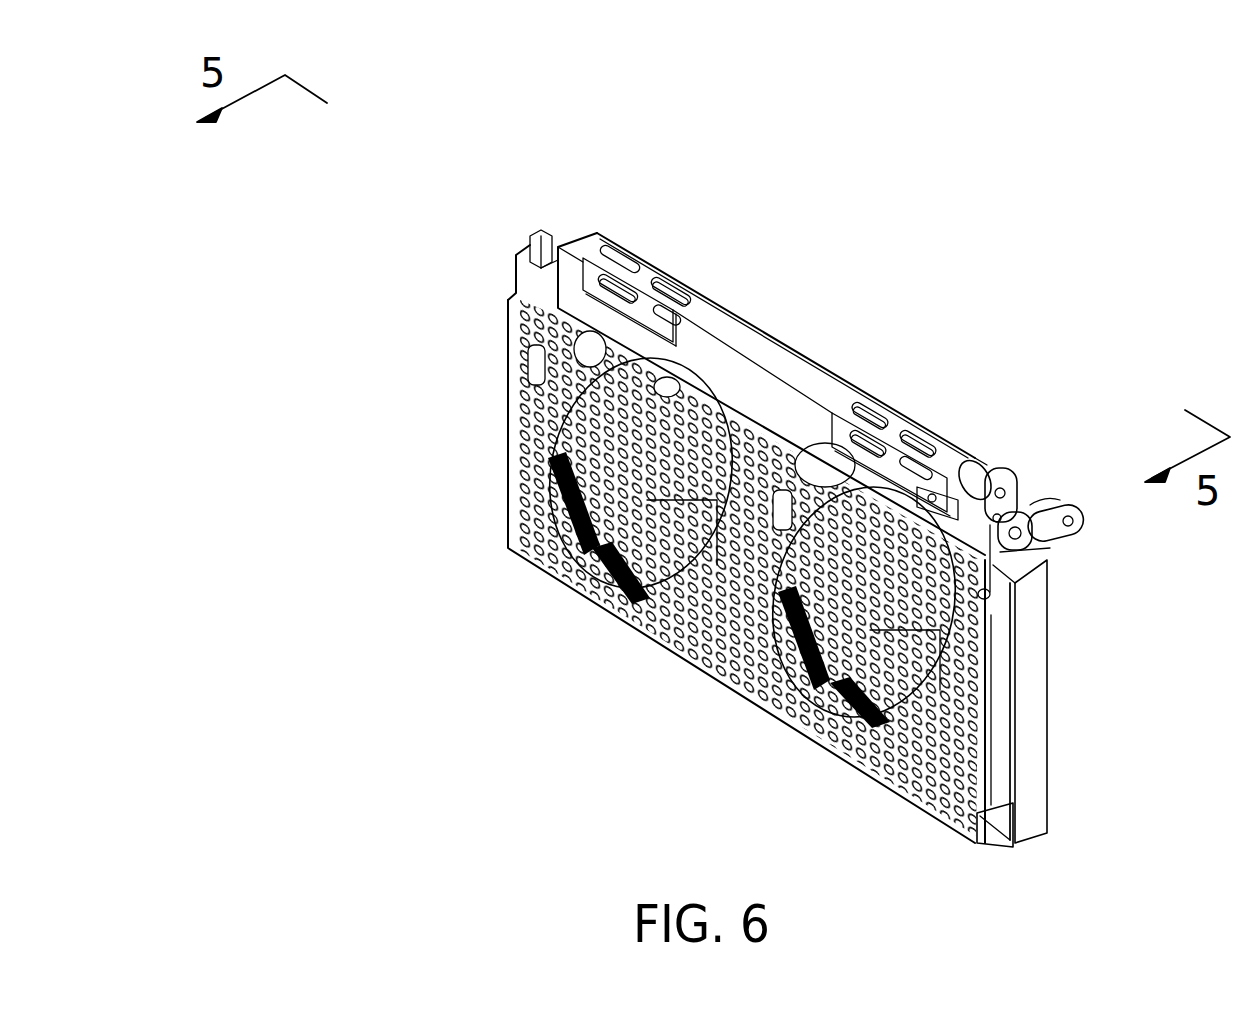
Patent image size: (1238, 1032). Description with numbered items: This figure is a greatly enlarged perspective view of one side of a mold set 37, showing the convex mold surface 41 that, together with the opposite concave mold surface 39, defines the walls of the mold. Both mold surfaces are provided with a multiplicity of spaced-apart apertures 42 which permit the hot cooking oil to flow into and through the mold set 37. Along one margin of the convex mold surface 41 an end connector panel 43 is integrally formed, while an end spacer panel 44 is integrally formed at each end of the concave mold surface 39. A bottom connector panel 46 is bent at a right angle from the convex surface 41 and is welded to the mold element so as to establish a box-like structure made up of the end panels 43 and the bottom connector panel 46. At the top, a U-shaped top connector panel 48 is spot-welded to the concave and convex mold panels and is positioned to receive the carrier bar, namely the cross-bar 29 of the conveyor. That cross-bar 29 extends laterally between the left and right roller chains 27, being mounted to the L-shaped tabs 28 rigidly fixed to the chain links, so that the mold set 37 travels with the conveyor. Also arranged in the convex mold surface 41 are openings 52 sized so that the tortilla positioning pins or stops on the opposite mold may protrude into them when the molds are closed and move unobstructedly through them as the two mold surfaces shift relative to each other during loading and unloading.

The roller chain 27 is at (1015, 475).
The L-shaped tab 28 is at (930, 460).
The cross-bar 29 is at (600, 298).
The mold set 37 is at (760, 330).
The concave mold surface 39 is at (1045, 548).
The convex mold surface 41 is at (947, 662).
The apertures 42 is at (878, 767).
The end connector panel 43 is at (1000, 770).
The end spacer panel 44 is at (1030, 800).
The bottom connector panel 46 is at (987, 820).
The U-shaped top connector panel 48 is at (703, 307).
The openings 52 is at (535, 362).